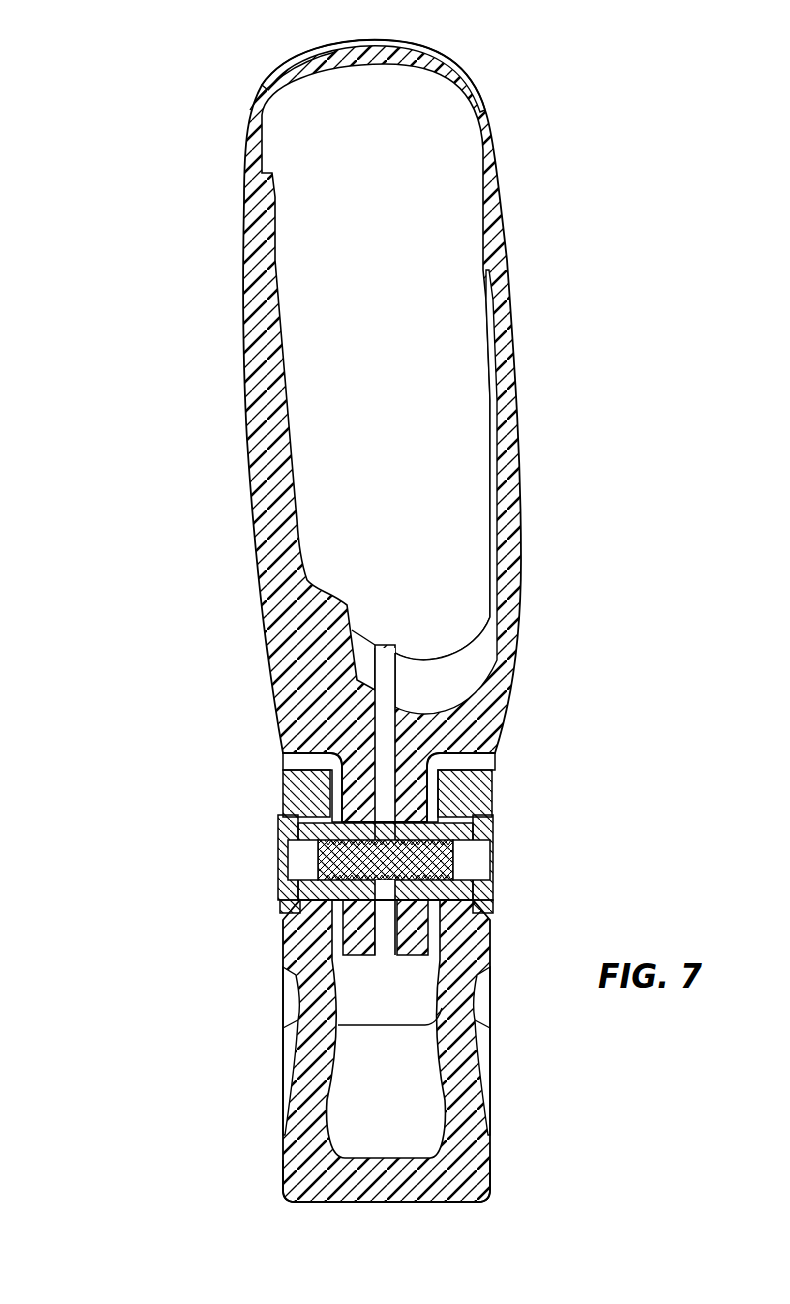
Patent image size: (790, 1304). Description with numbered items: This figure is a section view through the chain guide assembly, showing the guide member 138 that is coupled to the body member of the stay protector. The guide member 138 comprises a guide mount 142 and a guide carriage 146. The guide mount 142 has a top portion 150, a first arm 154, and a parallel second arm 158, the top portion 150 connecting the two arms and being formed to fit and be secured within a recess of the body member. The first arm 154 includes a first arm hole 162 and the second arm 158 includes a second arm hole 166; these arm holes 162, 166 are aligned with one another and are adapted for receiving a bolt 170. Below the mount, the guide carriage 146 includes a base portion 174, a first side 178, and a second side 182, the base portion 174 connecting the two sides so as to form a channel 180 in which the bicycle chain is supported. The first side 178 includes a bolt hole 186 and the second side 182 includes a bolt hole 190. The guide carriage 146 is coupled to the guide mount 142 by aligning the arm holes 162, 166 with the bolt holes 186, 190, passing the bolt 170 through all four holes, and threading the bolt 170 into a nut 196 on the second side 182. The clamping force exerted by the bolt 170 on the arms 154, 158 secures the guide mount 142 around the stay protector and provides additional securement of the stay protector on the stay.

The guide member 138 is at (329, 630).
The guide mount 142 is at (369, 420).
The guide carriage 146 is at (364, 1070).
The top portion 150 is at (352, 60).
The first arm 154 is at (270, 455).
The second arm 158 is at (510, 455).
The first arm hole 162 is at (295, 843).
The second arm hole 166 is at (490, 850).
The bolt 170 is at (283, 903).
The base portion 174 is at (397, 1190).
The first side 178 is at (297, 1092).
The channel 180 is at (400, 1020).
The second side 182 is at (457, 1000).
The bolt hole 186 is at (290, 880).
The bolt hole 190 is at (493, 875).
The nut 196 is at (493, 822).